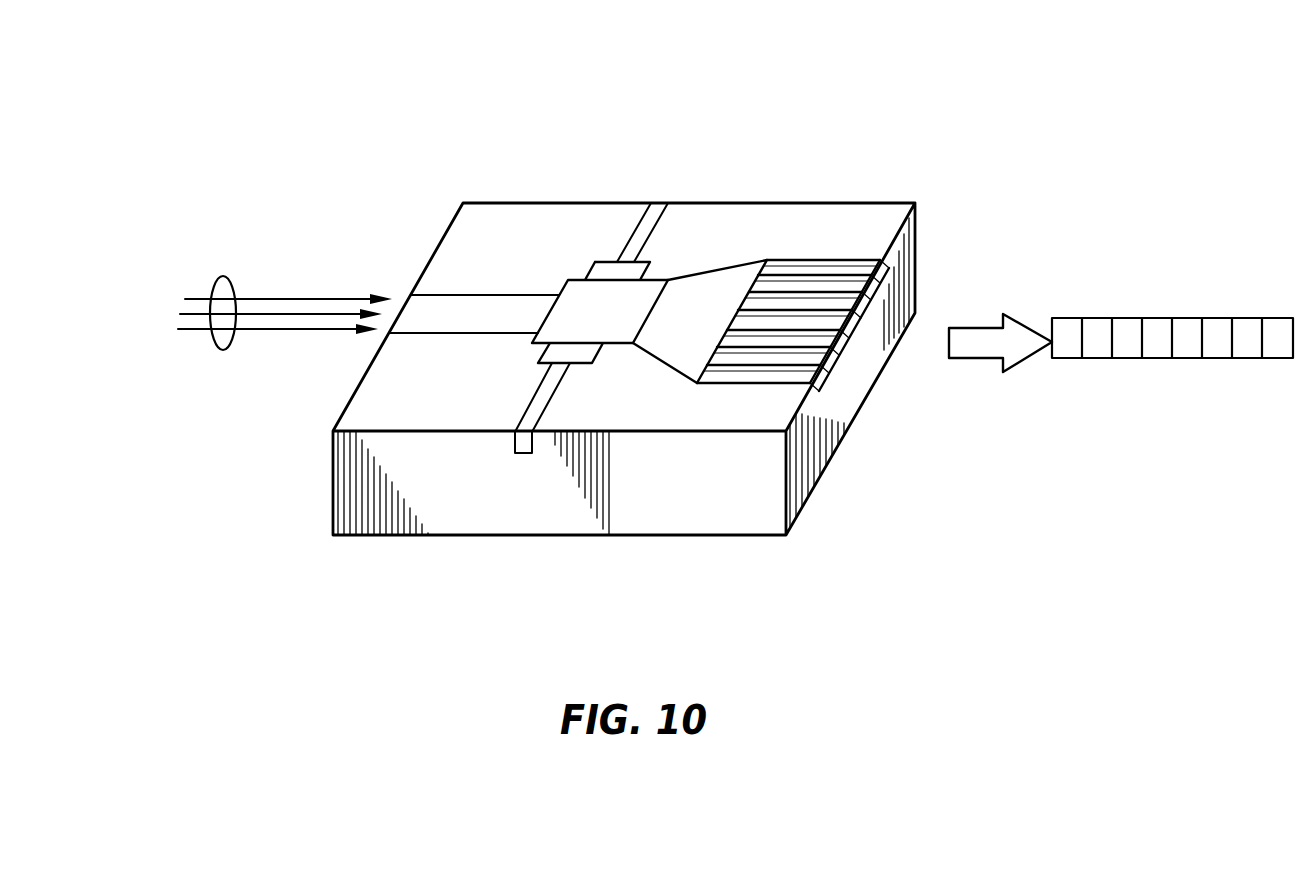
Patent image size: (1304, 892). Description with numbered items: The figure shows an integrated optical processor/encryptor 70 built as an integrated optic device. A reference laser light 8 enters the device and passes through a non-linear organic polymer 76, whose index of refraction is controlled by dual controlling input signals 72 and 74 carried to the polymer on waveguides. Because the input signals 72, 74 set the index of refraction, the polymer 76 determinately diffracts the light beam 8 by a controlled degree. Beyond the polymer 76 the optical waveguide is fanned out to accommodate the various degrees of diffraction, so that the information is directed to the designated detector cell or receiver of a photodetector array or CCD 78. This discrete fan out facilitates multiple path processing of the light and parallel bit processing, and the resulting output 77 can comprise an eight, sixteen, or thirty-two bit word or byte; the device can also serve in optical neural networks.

The reference laser light 8 is at (232, 276).
The integrated optical processor/encryptor 70 is at (892, 178).
The controlling input signal 72 is at (657, 198).
The controlling input signal 74 is at (520, 454).
The non-linear organic polymer 76 is at (578, 290).
The output 77 is at (1160, 318).
The photodetector array or CCD 78 is at (810, 258).